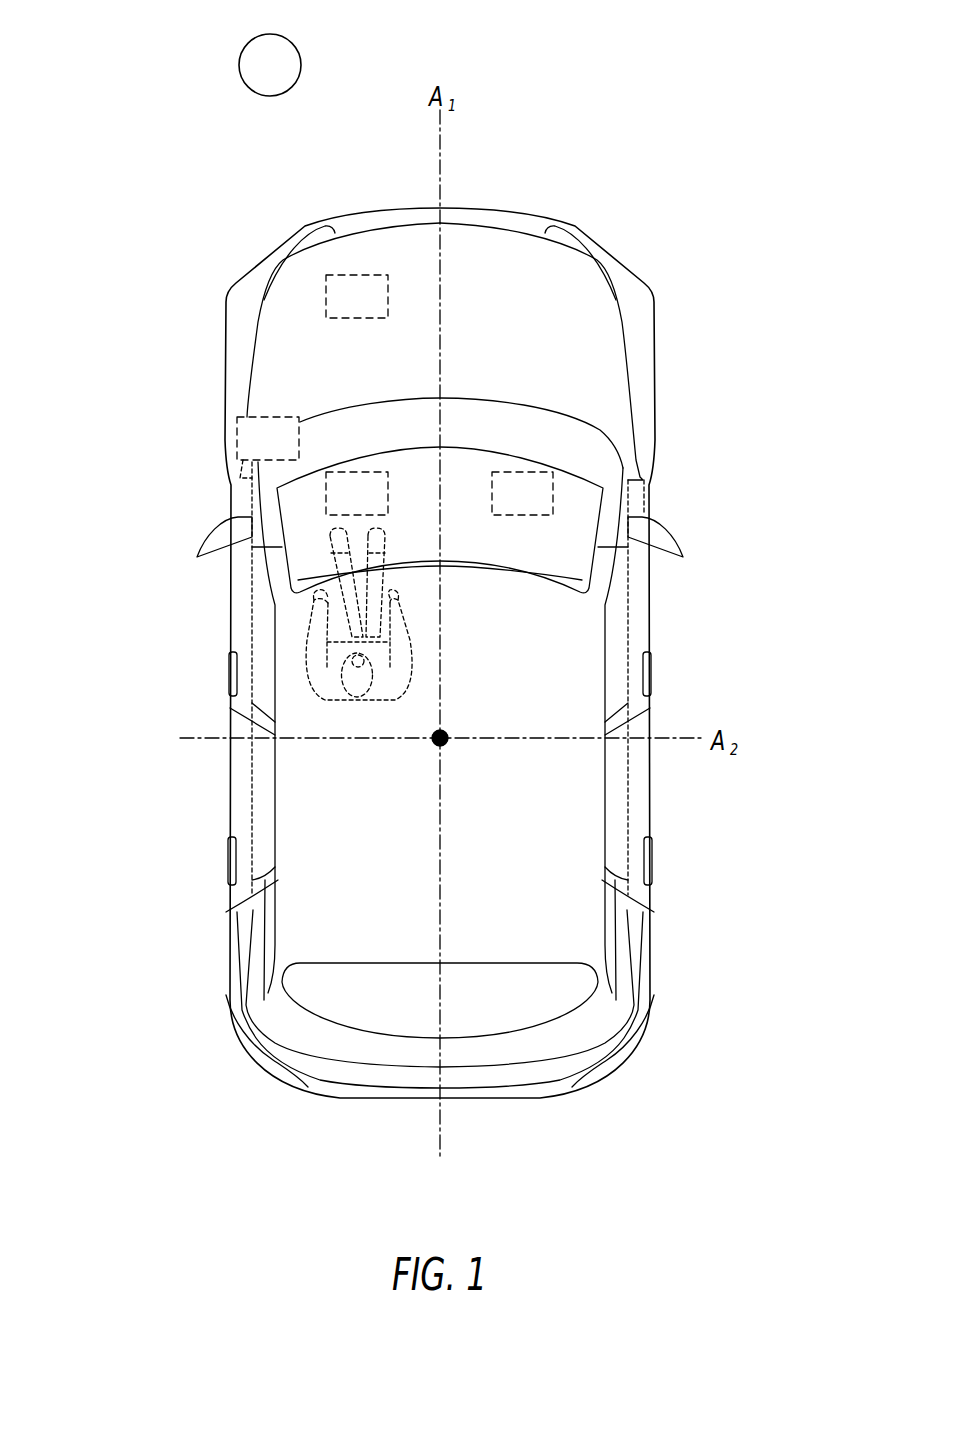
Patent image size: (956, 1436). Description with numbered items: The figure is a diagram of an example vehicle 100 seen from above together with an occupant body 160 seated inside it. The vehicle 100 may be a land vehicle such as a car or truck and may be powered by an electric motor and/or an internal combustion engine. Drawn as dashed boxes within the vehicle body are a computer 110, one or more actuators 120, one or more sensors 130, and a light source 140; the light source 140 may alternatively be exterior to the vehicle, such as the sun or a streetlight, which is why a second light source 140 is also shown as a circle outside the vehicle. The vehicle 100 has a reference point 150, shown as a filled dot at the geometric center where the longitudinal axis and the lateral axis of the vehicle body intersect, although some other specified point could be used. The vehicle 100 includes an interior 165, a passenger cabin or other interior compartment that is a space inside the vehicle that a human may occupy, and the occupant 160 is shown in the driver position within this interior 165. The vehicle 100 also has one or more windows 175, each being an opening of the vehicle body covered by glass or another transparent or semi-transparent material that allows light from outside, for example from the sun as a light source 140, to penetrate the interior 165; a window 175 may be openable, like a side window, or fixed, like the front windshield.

The vehicle 100 is at (512, 874).
The computer 110 is at (268, 438).
The actuator 120 is at (357, 296).
The sensor 130 is at (357, 493).
The light source 140 is at (192, 27).
The reference point 150 is at (447, 742).
The occupant body 160 is at (305, 680).
The interior 165 is at (258, 800).
The window 175 is at (268, 630).